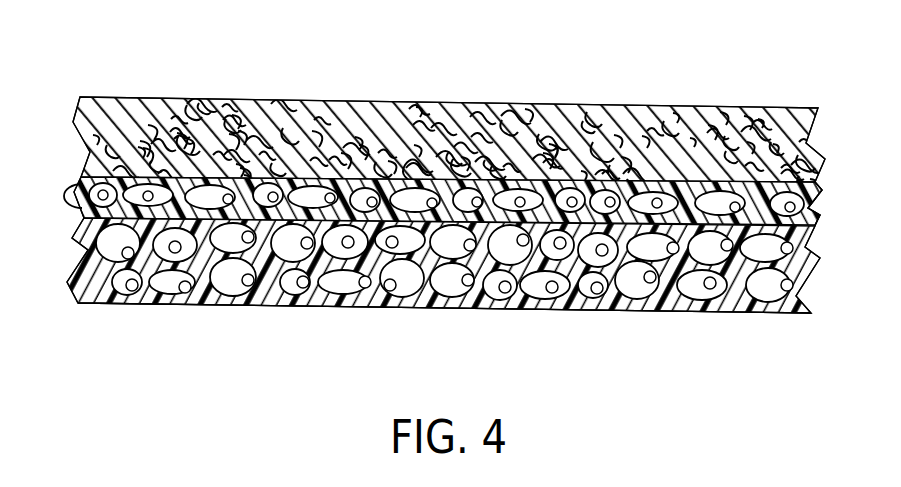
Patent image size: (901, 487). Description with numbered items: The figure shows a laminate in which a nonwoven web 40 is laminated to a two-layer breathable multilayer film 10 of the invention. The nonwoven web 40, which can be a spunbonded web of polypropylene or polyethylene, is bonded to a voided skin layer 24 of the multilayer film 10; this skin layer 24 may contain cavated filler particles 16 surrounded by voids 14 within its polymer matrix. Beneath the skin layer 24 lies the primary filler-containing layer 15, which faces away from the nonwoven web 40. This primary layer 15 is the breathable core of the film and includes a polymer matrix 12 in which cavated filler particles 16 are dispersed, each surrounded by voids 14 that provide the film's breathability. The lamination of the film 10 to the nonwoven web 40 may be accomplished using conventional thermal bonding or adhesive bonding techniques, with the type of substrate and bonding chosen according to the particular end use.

The multilayer film 10 is at (818, 225).
The polymer matrix 12 is at (818, 213).
The voids 14 is at (78, 210).
The primary filler-containing layer 15 is at (267, 308).
The filler particles 16 is at (83, 183).
The skin layer 24 is at (813, 183).
The nonwoven web 40 is at (613, 103).